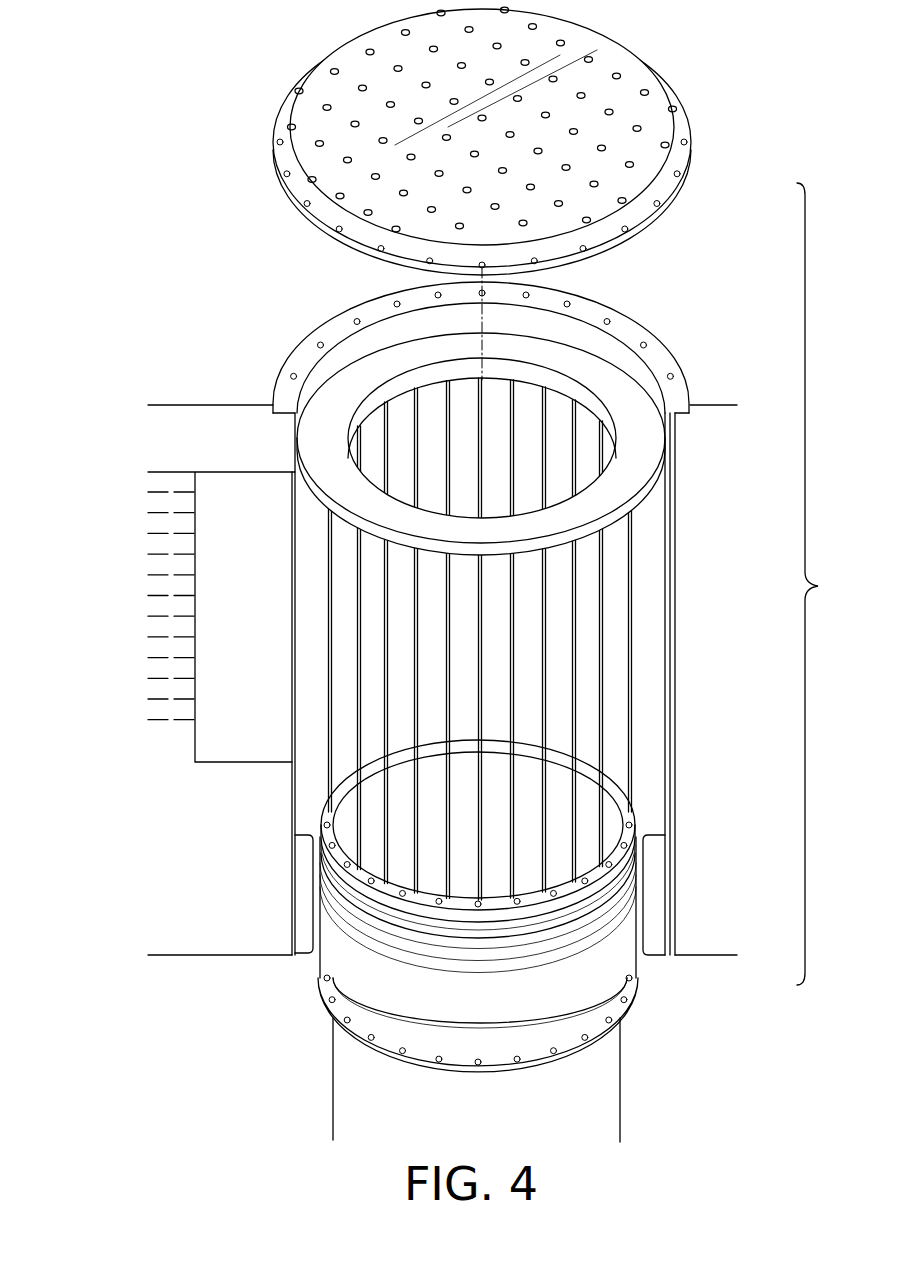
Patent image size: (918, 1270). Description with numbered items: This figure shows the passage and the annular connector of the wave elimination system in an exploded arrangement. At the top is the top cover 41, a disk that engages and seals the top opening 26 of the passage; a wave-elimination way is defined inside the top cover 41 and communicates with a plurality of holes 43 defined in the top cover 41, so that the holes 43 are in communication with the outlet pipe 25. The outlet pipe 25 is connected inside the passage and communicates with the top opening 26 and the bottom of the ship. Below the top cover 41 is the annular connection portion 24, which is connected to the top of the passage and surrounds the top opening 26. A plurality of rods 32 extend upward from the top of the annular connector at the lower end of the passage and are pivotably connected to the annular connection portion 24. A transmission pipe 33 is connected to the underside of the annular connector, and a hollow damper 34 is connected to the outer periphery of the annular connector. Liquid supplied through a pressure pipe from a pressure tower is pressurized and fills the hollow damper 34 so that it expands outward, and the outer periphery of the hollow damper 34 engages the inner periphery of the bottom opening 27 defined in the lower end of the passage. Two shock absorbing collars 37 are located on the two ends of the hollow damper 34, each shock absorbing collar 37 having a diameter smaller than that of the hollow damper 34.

The top cover 41 is at (622, 57).
The holes 43 is at (368, 52).
The annular connection portion 24 is at (600, 377).
The top opening 26 is at (403, 400).
The outlet pipe 25 is at (678, 572).
The rods 32 is at (600, 691).
The bottom opening 27 is at (634, 899).
The shock absorbing collars 37 is at (447, 930).
The hollow damper 34 is at (493, 1013).
The transmission pipe 33 is at (620, 1062).